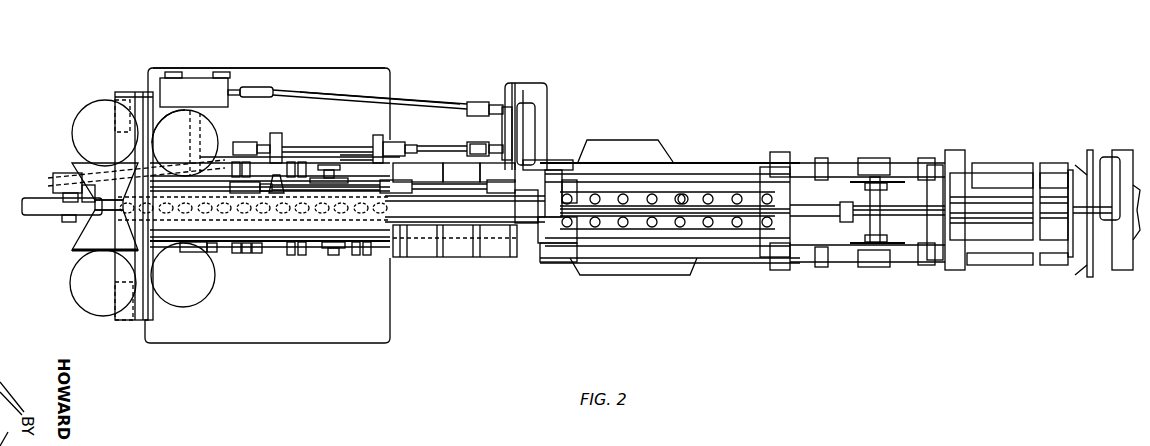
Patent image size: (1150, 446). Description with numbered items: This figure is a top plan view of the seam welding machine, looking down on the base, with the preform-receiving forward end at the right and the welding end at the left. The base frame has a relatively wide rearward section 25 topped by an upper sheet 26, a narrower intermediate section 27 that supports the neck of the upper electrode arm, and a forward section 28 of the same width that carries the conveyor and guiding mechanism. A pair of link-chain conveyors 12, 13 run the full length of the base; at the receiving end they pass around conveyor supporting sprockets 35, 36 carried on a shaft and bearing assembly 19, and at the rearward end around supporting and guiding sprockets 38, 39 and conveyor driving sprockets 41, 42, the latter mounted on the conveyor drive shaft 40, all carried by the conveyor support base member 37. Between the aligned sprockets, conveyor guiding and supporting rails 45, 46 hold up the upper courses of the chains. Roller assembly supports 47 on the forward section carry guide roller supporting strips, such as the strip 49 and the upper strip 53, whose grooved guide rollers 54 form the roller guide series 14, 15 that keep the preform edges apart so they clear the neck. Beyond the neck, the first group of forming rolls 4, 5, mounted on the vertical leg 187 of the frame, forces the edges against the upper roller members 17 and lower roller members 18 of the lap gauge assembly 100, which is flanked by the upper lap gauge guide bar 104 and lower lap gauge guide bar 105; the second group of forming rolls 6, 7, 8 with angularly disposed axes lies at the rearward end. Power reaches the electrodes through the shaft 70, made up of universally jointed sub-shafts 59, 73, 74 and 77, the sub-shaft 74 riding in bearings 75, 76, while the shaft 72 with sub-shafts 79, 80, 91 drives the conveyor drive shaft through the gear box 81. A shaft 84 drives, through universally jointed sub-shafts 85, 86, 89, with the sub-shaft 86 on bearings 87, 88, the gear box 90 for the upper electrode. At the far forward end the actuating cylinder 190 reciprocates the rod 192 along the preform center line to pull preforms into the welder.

The forming roll 4 is at (196, 294).
The forming roll 5 is at (208, 128).
The forming roll 6 is at (82, 277).
The forming roll 7 is at (91, 116).
The forming roll 8 is at (91, 242).
The conveyor 12 is at (740, 178).
The conveyor 13 is at (725, 244).
The roller guide series 14 is at (708, 230).
The roller guide series 15 is at (712, 190).
The upper roller members 17 is at (278, 242).
The lower roller members 18 is at (333, 160).
The shaft and bearing assembly 19 is at (854, 273).
The rearward section 25 is at (378, 333).
The upper sheet 26 is at (346, 305).
The intermediate section 27 is at (462, 258).
The forward section 28 is at (751, 262).
The conveyor supporting sprocket 35 is at (894, 246).
The conveyor supporting sprocket 36 is at (898, 182).
The conveyor support base member 37 is at (247, 254).
The supporting and guiding sprocket 38 is at (256, 254).
The supporting and guiding sprocket 39 is at (257, 182).
The conveyor drive shaft 40 is at (195, 131).
The conveyor driving sprocket 41 is at (213, 243).
The conveyor driving sprocket 42 is at (183, 174).
The conveyor guiding and supporting rail 45 is at (806, 246).
The conveyor guiding and supporting rail 46 is at (840, 180).
The roller assembly support 47 is at (558, 232).
The guide roller supporting strip 49 is at (670, 224).
The guide roller supporting strip 53 is at (697, 195).
The guide rollers 54 is at (683, 194).
The universally jointed sub-shaft 59 is at (495, 147).
The shaft 70 is at (429, 137).
The shaft 72 is at (455, 94).
The universally jointed sub-shaft 73 is at (478, 150).
The universally jointed sub-shaft 74 is at (349, 163).
The bearing 75 is at (382, 147).
The bearing 76 is at (278, 136).
The universally jointed sub-shaft 77 is at (205, 160).
The universally jointed sub-shaft 79 is at (490, 104).
The universally jointed sub-shaft 80 is at (423, 98).
The gear box 81 is at (210, 87).
The shaft 84 is at (510, 178).
The universally jointed sub-shaft 85 is at (449, 176).
The universally jointed sub-shaft 86 is at (337, 173).
The bearing 87 is at (398, 174).
The bearing 88 is at (288, 190).
The universally jointed sub-shaft 89 is at (118, 168).
The gear box 90 is at (68, 176).
The universally jointed sub-shaft 91 is at (249, 85).
The lap gauge assembly 100 is at (181, 243).
The upper lap gauge guide bar 104 is at (301, 256).
The lower lap gauge guide bar 105 is at (365, 256).
The vertical leg 187 is at (124, 92).
The actuating cylinder 190 is at (802, 208).
The rod 192 is at (998, 213).